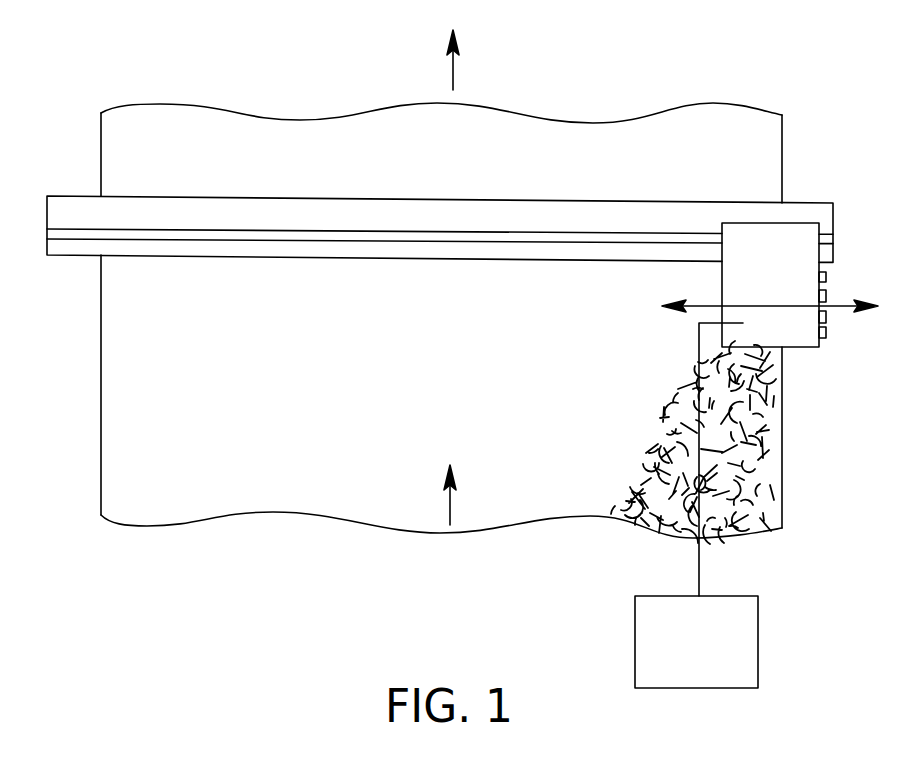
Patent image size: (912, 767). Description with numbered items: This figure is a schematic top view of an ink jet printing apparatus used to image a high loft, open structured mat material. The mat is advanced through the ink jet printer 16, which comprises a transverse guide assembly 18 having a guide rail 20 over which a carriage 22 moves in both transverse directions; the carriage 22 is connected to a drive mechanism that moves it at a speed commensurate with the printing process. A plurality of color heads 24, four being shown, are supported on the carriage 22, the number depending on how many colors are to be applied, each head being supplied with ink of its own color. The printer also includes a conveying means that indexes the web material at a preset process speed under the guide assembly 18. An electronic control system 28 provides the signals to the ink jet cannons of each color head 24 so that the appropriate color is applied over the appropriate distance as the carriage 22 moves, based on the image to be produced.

The ink jet printer 16 is at (786, 390).
The transverse guide assembly 18 is at (75, 213).
The guide rail 20 is at (71, 235).
The carriage 22 is at (795, 347).
The color heads 24 is at (826, 277).
The electronic control system 28 is at (758, 637).